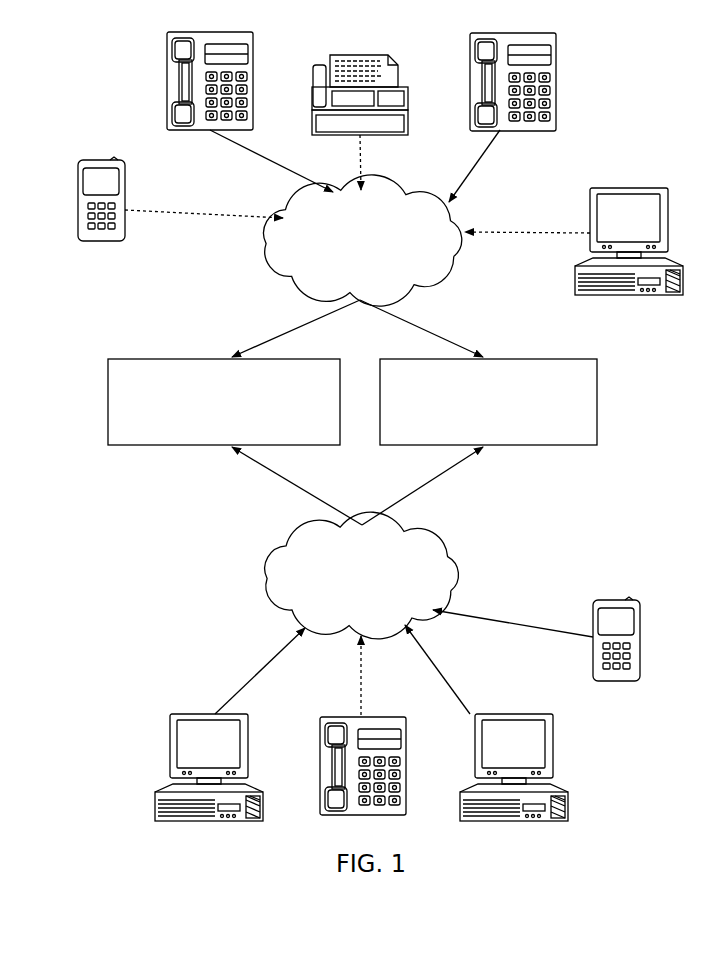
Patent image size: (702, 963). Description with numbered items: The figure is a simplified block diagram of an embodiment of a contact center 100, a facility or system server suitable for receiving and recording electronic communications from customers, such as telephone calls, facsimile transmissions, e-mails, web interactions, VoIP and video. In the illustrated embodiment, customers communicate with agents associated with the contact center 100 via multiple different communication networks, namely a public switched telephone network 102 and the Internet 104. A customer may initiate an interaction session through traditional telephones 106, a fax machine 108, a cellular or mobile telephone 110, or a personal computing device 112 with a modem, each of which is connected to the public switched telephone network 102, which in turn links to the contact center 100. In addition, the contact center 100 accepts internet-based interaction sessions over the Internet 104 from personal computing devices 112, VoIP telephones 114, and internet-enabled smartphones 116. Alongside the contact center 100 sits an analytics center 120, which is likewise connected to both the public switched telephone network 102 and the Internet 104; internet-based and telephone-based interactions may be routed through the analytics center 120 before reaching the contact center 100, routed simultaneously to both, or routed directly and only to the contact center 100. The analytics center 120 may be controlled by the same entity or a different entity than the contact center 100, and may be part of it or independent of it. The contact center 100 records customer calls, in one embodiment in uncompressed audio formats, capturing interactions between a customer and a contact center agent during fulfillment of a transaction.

The contact center 100 is at (108, 383).
The public switched telephone network 102 is at (265, 238).
The Internet 104 is at (458, 548).
The traditional telephone 106 is at (167, 68).
The fax machine 108 is at (360, 53).
The cellular telephone 110 is at (78, 190).
The personal computing device 112 is at (632, 188).
The VoIP telephone 114 is at (320, 748).
The internet-enabled smartphone 116 is at (605, 600).
The analytics center 120 is at (597, 405).